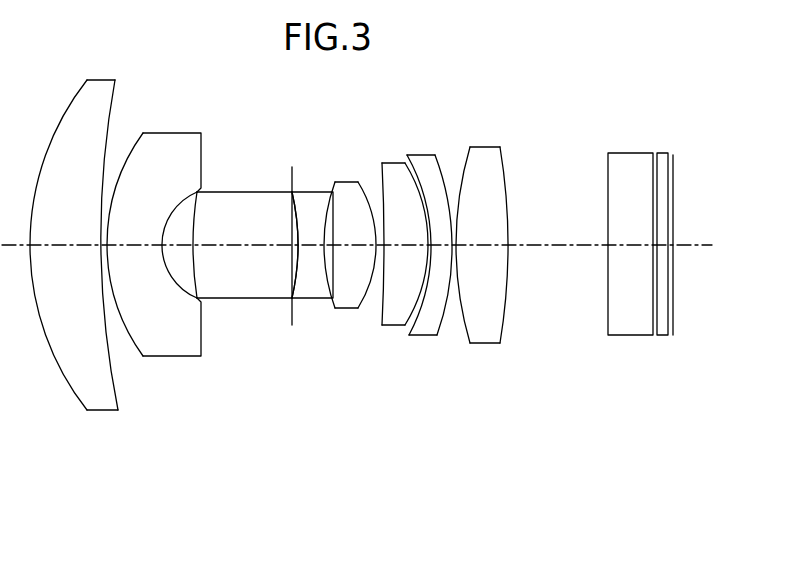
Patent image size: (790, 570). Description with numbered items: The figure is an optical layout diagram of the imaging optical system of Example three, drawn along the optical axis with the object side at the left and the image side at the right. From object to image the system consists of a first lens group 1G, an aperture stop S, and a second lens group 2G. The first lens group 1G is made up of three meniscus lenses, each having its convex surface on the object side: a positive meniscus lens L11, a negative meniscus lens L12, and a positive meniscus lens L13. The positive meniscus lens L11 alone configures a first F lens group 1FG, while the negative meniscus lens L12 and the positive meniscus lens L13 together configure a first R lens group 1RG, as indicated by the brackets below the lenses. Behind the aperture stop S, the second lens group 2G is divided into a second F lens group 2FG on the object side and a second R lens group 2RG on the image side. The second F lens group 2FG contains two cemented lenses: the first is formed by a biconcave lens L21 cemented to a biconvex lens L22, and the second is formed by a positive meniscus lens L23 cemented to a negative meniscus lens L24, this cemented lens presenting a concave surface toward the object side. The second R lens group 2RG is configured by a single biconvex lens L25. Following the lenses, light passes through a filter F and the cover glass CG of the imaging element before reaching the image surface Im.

The positive meniscus lens L11 is at (75, 236).
The negative meniscus lens L12 is at (150, 236).
The positive meniscus lens L13 is at (246, 236).
The aperture stop S is at (292, 168).
The biconcave lens L21 is at (312, 288).
The biconvex lens L22 is at (348, 298).
The positive meniscus lens L23 is at (395, 312).
The negative meniscus lens L24 is at (429, 271).
The biconvex lens L25 is at (488, 318).
The filter F is at (610, 153).
The cover glass CG is at (660, 153).
The image surface Im is at (673, 158).
The first F lens group 1FG is at (74, 278).
The first R lens group 1RG is at (202, 305).
The first lens group 1G is at (164, 309).
The second F lens group 2FG is at (361, 314).
The second R lens group 2RG is at (486, 310).
The second lens group 2G is at (394, 342).